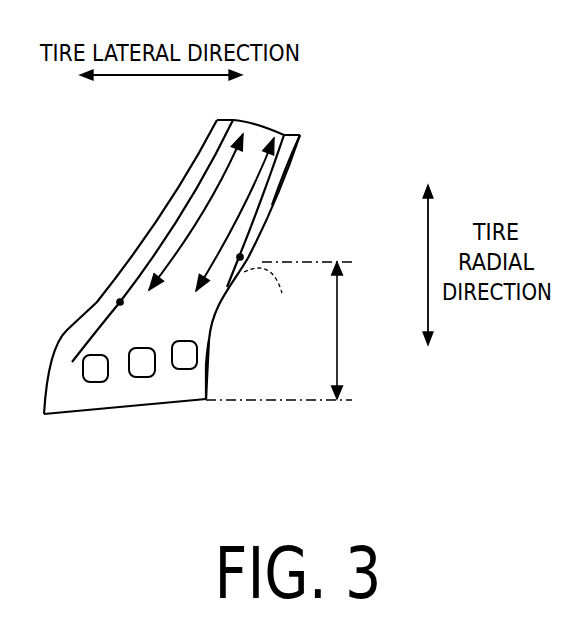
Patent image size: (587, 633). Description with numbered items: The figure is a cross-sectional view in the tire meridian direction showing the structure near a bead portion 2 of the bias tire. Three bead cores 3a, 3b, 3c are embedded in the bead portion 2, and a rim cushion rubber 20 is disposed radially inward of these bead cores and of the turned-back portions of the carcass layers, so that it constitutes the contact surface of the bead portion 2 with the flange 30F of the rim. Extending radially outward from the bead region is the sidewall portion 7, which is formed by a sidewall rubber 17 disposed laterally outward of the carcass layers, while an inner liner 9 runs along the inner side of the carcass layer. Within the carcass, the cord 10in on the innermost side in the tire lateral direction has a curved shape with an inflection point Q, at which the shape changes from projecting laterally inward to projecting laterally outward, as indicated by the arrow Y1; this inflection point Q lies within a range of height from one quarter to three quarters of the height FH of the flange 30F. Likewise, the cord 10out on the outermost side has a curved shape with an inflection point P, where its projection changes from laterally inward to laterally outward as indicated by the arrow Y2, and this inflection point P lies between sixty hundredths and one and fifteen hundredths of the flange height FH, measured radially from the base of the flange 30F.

The bead portion 2 is at (67, 418).
The bead core 3a is at (98, 382).
The bead core 3b is at (143, 377).
The bead core 3c is at (183, 369).
The sidewall portion 7 is at (302, 142).
The inner liner 9 is at (190, 166).
The cord on the innermost side of the carcass layers 10in is at (165, 238).
The cord on the outermost side of the carcass layers 10out is at (242, 273).
The sidewall rubber 17 is at (288, 162).
The rim cushion rubber 20 is at (198, 401).
The flange 30F is at (272, 295).
The height of the flange FH is at (339, 329).
The inflection point P is at (240, 257).
The inflection point Q is at (120, 302).
The arrow Y1 is at (212, 199).
The arrow Y2 is at (257, 193).